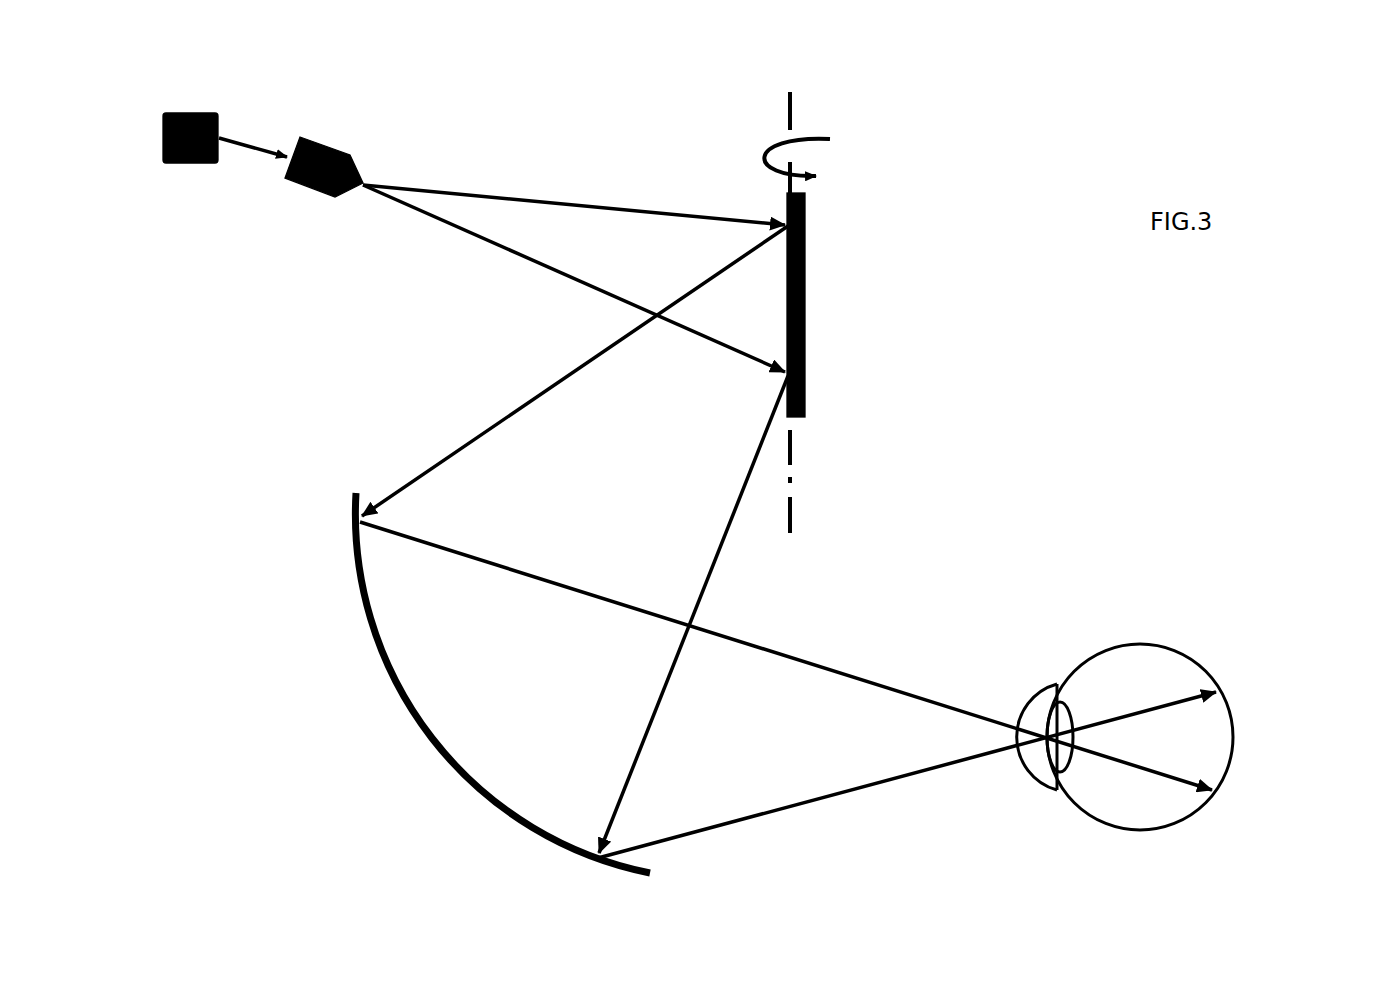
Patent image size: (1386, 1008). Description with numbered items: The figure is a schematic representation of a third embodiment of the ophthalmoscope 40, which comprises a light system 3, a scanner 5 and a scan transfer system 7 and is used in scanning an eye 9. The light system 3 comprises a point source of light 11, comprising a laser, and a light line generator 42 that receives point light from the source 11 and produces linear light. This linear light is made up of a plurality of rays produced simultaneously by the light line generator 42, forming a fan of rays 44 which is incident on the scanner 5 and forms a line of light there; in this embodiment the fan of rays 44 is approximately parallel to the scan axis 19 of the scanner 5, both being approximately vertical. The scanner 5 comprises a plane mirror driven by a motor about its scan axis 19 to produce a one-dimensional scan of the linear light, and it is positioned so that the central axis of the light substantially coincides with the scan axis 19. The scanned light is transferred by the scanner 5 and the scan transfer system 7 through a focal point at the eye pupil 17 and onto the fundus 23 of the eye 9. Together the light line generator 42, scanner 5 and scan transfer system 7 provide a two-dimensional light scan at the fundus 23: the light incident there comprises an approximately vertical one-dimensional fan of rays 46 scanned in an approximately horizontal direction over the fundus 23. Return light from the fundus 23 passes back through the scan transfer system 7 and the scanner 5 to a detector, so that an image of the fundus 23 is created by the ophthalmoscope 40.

The light system 3 is at (336, 111).
The scanner 5 is at (805, 307).
The scan transfer system 7 is at (362, 600).
The eye 9 is at (1157, 720).
The point source of light 11 is at (190, 113).
The eye pupil 17 is at (1014, 797).
The scan axis 19 is at (790, 520).
The fundus 23 is at (1205, 668).
The ophthalmoscope 40 is at (1066, 444).
The light line generator 42 is at (310, 192).
The fan of rays 44 is at (527, 277).
The 1D fan of rays 46 is at (1233, 737).